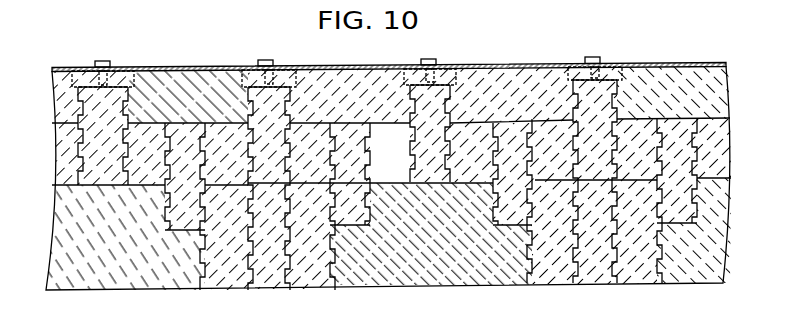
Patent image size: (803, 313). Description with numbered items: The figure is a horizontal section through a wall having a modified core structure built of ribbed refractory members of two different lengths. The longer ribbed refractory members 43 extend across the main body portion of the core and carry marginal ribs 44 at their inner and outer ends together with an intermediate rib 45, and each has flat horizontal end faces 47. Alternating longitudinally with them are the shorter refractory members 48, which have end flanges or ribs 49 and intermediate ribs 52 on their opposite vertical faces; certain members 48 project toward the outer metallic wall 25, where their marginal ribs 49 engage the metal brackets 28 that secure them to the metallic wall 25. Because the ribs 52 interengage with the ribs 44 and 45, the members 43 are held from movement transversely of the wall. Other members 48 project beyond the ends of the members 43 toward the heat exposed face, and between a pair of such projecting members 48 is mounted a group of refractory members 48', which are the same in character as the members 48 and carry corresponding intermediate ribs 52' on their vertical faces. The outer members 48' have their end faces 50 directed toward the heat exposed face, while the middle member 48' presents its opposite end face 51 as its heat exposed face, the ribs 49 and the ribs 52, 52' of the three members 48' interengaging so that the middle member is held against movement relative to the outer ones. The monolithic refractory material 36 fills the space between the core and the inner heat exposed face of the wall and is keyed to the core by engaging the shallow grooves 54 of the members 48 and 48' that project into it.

The metallic wall 25 is at (216, 66).
The metal bracket 28 is at (287, 66).
The monolithic refractory material 36 is at (88, 285).
The ribbed refractory member 43 is at (142, 177).
The marginal rib 44 is at (248, 131).
The intermediate rib 45 is at (326, 150).
The flat horizontal end face 47 is at (125, 249).
The refractory member 48 is at (417, 173).
The refractory member 48' is at (405, 246).
The end flange 49 is at (76, 88).
The flat vertical end face 50 is at (218, 290).
The flat vertical end face 51 is at (627, 182).
The intermediate rib 52 is at (347, 162).
The key block 52' is at (430, 133).
The shallow groove 54 is at (325, 245).